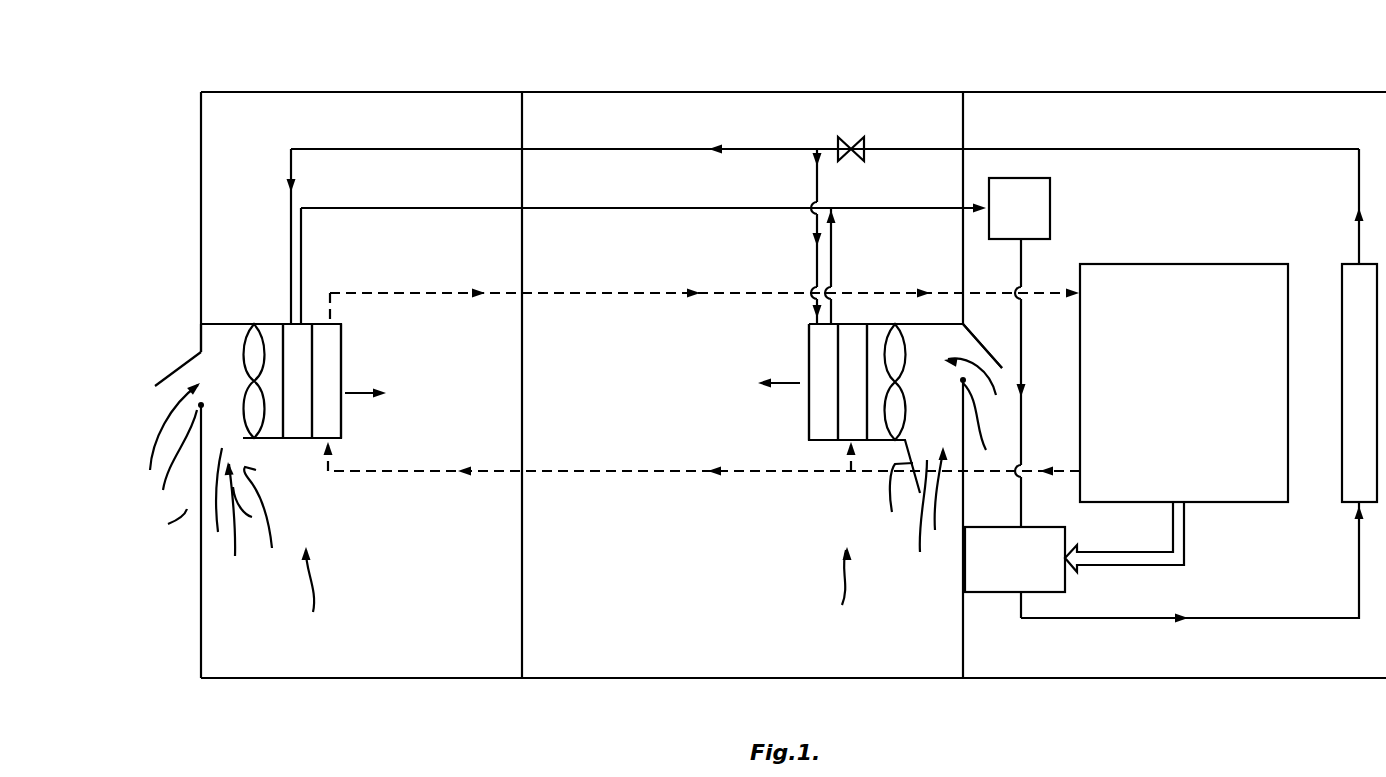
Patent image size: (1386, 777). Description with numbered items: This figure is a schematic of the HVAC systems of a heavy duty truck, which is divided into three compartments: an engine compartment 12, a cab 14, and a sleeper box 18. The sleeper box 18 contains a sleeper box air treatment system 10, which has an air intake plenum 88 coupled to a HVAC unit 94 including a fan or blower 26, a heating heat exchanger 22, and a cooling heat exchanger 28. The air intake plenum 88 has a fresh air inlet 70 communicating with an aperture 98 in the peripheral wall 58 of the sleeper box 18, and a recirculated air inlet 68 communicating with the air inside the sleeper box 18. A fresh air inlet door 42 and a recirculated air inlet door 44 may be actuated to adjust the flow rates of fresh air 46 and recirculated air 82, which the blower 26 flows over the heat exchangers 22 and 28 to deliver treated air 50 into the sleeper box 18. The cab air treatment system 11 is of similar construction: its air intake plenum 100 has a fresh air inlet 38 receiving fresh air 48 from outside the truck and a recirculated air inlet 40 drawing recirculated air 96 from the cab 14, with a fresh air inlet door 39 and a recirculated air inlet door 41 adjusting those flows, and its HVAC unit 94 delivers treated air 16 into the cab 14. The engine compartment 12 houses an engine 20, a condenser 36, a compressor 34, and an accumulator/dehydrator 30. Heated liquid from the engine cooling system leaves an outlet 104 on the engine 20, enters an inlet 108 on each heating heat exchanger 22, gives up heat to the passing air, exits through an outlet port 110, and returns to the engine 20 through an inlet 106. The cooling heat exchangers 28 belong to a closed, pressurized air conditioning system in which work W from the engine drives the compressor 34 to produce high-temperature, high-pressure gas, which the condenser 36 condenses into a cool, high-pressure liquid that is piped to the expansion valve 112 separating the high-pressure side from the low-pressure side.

The sleeper box air treatment system 10 is at (322, 592).
The cab air treatment system 11 is at (836, 591).
The engine compartment 12 is at (1216, 91).
The cab 14 is at (776, 91).
The treated air 16 is at (782, 385).
The sleeper box 18 is at (374, 91).
The engine 20 is at (1225, 270).
The heating heat exchanger 22 is at (336, 330).
The fan or blower 26 is at (258, 330).
The cooling heat exchanger 28 is at (305, 325).
The accumulator/dehydrator 30 is at (1050, 212).
The compressor 34 is at (993, 592).
The condenser 36 is at (1342, 492).
The fresh air inlet 38 is at (989, 424).
The fresh air inlet door 39 is at (1004, 334).
The recirculated air inlet 40 is at (920, 520).
The recirculated air inlet door 41 is at (889, 509).
The fresh air inlet door 42 is at (170, 371).
The recirculated air inlet door 44 is at (271, 521).
The fresh air 46 is at (150, 428).
The fresh air 48 is at (997, 395).
The treated air 50 is at (360, 396).
The peripheral wall 58 is at (200, 326).
The recirculated air inlet 68 is at (219, 502).
The fresh air inlet 70 is at (166, 461).
The recirculated air 82 is at (240, 525).
The air intake plenum 88 is at (272, 441).
The HVAC unit 94 is at (345, 345).
The recirculated air 96 is at (945, 489).
The aperture 98 is at (164, 524).
The air intake plenum 100 is at (939, 322).
The outlet 104 is at (1080, 470).
The inlet 106 is at (1080, 292).
The inlet 108 is at (341, 442).
The outlet port 110 is at (329, 320).
The expansion valve 112 is at (864, 140).
The work W is at (1130, 565).